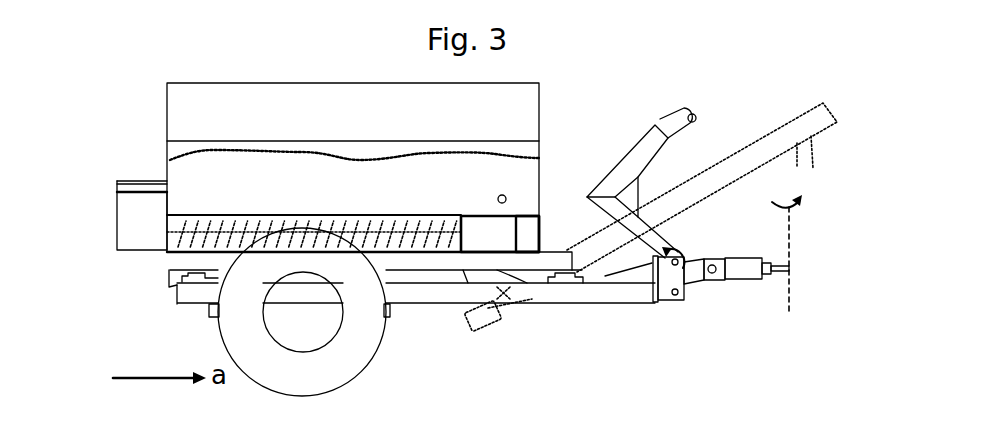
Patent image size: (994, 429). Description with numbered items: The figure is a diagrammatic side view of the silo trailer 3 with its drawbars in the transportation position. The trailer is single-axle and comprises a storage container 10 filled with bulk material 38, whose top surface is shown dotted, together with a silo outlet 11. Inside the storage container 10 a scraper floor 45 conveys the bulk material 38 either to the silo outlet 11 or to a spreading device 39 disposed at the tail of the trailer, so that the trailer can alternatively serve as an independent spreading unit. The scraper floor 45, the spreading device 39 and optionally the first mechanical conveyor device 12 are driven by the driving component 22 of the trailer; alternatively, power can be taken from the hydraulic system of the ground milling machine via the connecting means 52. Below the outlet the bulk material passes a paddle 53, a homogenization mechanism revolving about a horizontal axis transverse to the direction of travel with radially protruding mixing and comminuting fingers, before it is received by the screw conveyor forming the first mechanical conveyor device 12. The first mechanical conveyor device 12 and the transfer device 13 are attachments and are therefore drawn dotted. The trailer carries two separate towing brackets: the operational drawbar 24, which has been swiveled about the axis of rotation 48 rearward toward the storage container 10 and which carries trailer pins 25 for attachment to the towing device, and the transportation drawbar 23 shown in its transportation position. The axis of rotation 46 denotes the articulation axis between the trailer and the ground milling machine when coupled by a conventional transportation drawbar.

The silo trailer 3 is at (125, 66).
The storage container 10 is at (320, 110).
The bulk material 38 is at (208, 152).
The spreading device 39 is at (147, 208).
The scraper floor 45 is at (188, 238).
The driving component 22 is at (498, 225).
The connecting means 52 is at (532, 233).
The silo outlet 11 is at (493, 273).
The paddle 53 is at (503, 295).
The operational drawbar 24 is at (635, 158).
The trailer pins 25 is at (693, 113).
The first mechanical conveyor device 12 is at (717, 173).
The transfer device 13 is at (805, 148).
The axis of rotation 46 is at (790, 288).
The axis of rotation 48 is at (677, 262).
The transportation drawbar 23 is at (752, 268).